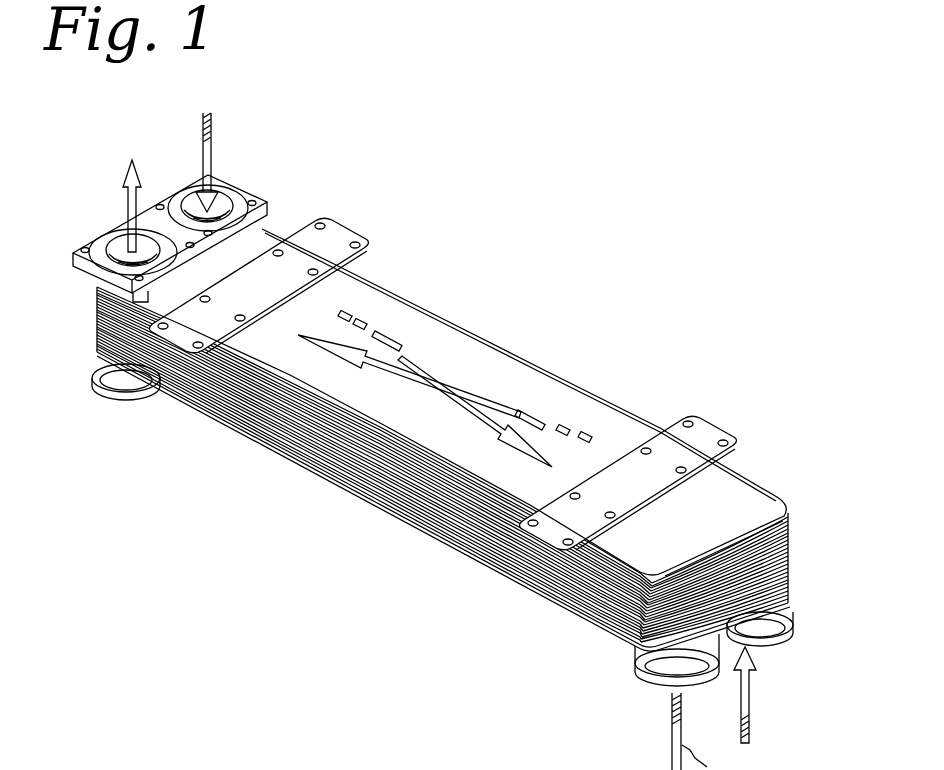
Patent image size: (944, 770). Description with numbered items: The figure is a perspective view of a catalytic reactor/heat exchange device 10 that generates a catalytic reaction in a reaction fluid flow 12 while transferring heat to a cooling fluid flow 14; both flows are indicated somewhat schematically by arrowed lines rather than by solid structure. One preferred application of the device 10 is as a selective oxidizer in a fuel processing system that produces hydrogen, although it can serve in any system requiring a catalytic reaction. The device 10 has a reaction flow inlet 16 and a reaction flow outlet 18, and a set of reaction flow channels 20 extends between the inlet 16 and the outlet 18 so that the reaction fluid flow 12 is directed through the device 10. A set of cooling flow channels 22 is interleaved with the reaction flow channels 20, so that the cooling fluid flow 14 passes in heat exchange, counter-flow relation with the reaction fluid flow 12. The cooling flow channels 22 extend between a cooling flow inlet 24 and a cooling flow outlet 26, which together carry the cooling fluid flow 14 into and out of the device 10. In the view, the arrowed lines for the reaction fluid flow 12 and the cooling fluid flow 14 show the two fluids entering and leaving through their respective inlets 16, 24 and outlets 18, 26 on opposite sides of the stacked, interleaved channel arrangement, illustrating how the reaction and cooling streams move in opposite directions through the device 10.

The catalytic reactor/heat exchange device 10 is at (387, 200).
The reaction fluid flow 12 is at (212, 165).
The cooling fluid flow 14 is at (125, 228).
The reaction flow inlet 16 is at (233, 182).
The reaction flow outlet 18 is at (658, 687).
The reaction flow channels 20 is at (187, 183).
The cooling flow channels 22 is at (110, 253).
The cooling flow inlet 24 is at (787, 630).
The cooling flow outlet 26 is at (113, 233).